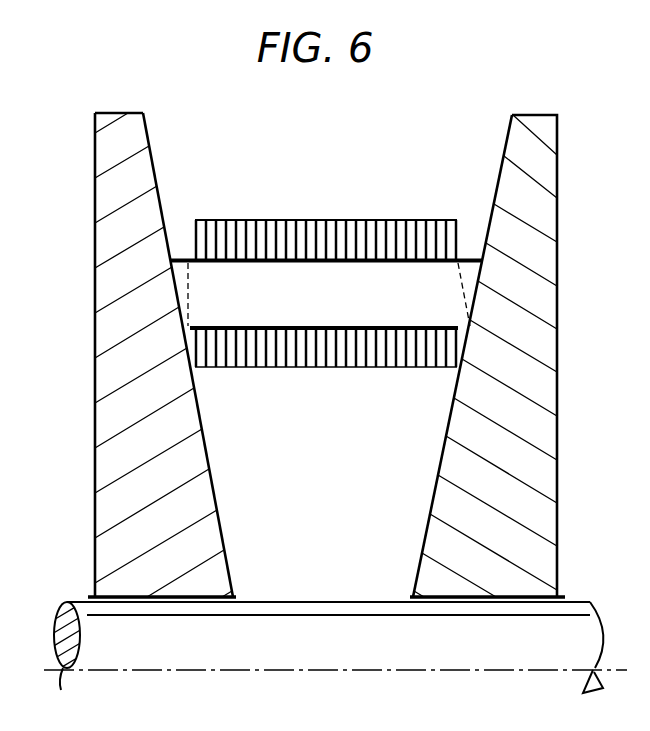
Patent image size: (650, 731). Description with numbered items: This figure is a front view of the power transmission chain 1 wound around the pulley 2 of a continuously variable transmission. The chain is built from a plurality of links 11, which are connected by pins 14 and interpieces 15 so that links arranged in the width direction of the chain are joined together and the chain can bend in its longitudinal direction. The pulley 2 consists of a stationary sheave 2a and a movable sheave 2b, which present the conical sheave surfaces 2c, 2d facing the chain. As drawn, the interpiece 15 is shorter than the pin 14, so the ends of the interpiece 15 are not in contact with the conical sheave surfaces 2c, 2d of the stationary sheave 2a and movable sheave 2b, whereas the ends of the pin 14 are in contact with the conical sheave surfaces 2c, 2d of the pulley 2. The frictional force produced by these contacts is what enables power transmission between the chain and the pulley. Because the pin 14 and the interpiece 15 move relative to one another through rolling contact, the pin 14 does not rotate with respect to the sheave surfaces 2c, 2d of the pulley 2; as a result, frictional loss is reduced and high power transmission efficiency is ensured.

The power transmission chain 1 is at (393, 246).
The pulley 2 is at (323, 355).
The stationary sheave 2a is at (545, 441).
The movable sheave 2b is at (105, 458).
The conical sheave surface 2c is at (502, 184).
The conical sheave surface 2d is at (148, 158).
The link 11 is at (283, 219).
The pin 14 is at (473, 273).
The interpiece 15 is at (450, 310).